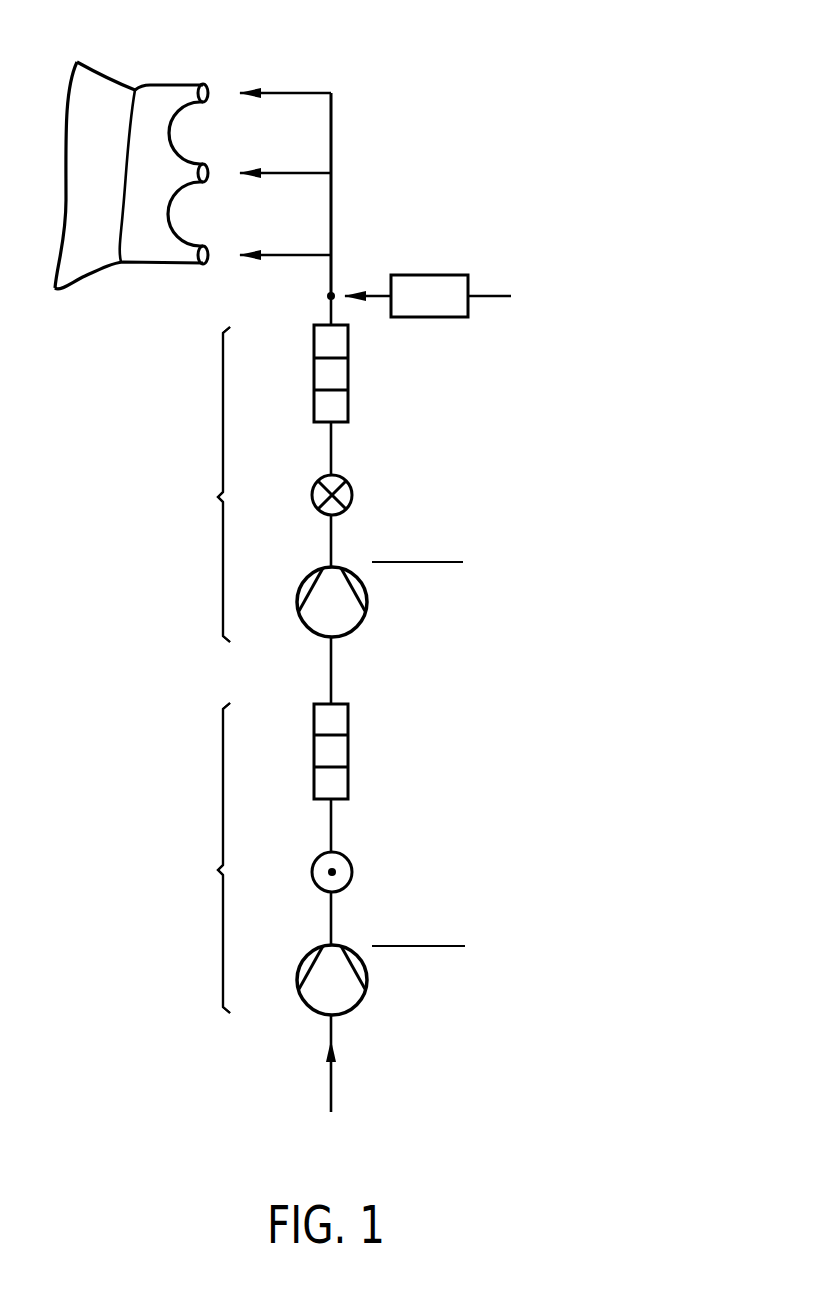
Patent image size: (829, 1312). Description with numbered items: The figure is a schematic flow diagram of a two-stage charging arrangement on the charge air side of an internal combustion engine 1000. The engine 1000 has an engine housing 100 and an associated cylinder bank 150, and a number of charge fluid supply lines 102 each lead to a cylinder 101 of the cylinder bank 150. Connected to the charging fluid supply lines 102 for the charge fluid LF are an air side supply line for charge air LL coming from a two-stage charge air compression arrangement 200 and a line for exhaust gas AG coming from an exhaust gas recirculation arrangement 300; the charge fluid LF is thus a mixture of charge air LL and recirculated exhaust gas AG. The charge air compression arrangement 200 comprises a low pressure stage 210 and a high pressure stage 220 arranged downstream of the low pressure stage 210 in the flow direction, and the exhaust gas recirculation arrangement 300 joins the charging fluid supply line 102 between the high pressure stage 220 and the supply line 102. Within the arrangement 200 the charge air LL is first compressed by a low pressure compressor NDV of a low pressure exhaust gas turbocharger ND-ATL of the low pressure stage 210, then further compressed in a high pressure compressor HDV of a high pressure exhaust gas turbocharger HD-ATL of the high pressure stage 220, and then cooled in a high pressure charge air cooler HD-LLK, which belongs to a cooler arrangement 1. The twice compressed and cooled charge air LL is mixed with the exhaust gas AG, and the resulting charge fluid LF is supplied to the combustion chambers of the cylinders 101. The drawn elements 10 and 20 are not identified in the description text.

The internal combustion engine 1000 is at (438, 55).
The cooler arrangement 1 is at (507, 373).
The fixed orifice / throttle 10 is at (350, 859).
The control valve 20 is at (350, 484).
The engine housing 100 is at (117, 193).
The cylinder 101 is at (168, 123).
The charge fluid supply line 102 is at (275, 92).
The cylinder bank 150 is at (150, 82).
The two-stage charge air compression arrangement 200 is at (195, 676).
The low pressure stage 210 is at (201, 858).
The high pressure stage 220 is at (201, 484).
The exhaust gas recirculation arrangement 300 is at (428, 273).
The charge fluid LF is at (331, 143).
The exhaust gas AG is at (493, 296).
The high pressure charge air cooler HD-LLK is at (348, 373).
The charge air LL is at (352, 496).
The high pressure exhaust gas turbocharger HD-ATL is at (417, 547).
The high pressure compressor HDV is at (367, 601).
The low pressure exhaust gas turbocharger ND-ATL is at (418, 932).
The low pressure compressor NDV is at (367, 979).